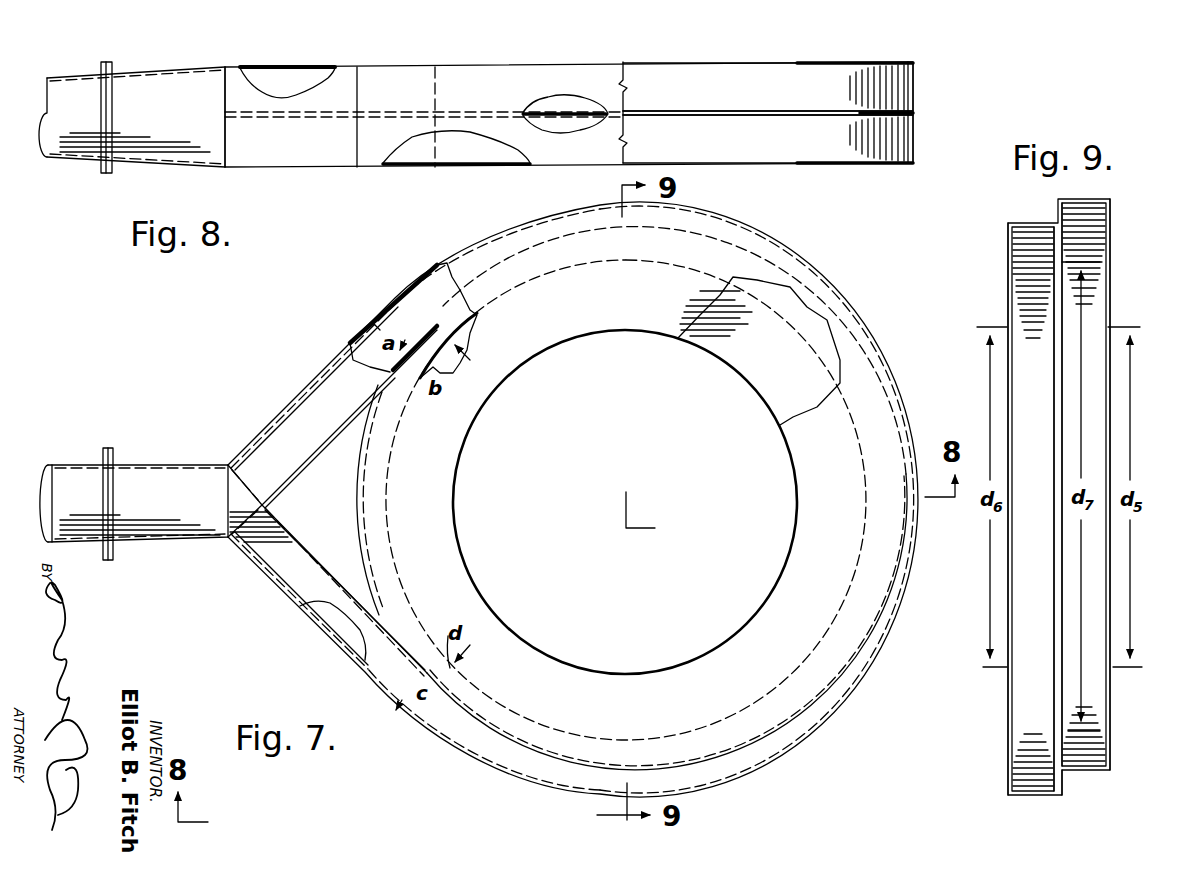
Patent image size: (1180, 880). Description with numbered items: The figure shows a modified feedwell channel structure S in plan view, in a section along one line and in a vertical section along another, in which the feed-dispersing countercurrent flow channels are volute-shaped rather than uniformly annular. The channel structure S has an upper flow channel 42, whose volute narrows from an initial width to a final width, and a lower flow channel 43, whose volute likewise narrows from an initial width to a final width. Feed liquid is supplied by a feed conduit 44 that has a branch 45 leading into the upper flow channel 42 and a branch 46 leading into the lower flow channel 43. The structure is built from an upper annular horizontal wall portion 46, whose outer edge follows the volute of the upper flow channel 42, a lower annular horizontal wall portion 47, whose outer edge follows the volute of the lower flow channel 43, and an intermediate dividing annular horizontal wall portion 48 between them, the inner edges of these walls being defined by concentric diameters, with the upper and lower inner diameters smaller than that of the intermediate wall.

In FIG. 8, the upper flow channel 42 is at (893, 90).
In FIG. 7, the upper flow channel 42 is at (430, 288).
In FIG. 9, the upper flow channel 42 is at (1088, 231).
In FIG. 8, the lower flow channel 43 is at (893, 135).
In FIG. 9, the lower flow channel 43 is at (1030, 258).
In FIG. 8, the feed conduit 44 is at (76, 162).
In FIG. 7, the feed conduit 44 is at (77, 462).
In FIG. 8, the branch 45 is at (318, 64).
In FIG. 7, the branch 45 is at (335, 360).
In FIG. 8, the branch 46 is at (342, 157).
In FIG. 7, the branch 46 is at (338, 628).
In FIG. 9, the branch 46 is at (1112, 686).
In FIG. 9, the lower annular horizontal wall portion 47 is at (1008, 686).
In FIG. 7, the intermediate dividing annular horizontal wall portion 48 is at (790, 315).
In FIG. 9, the intermediate dividing annular horizontal wall portion 48 is at (1058, 748).
In FIG. 9, the channel structure S is at (1075, 778).